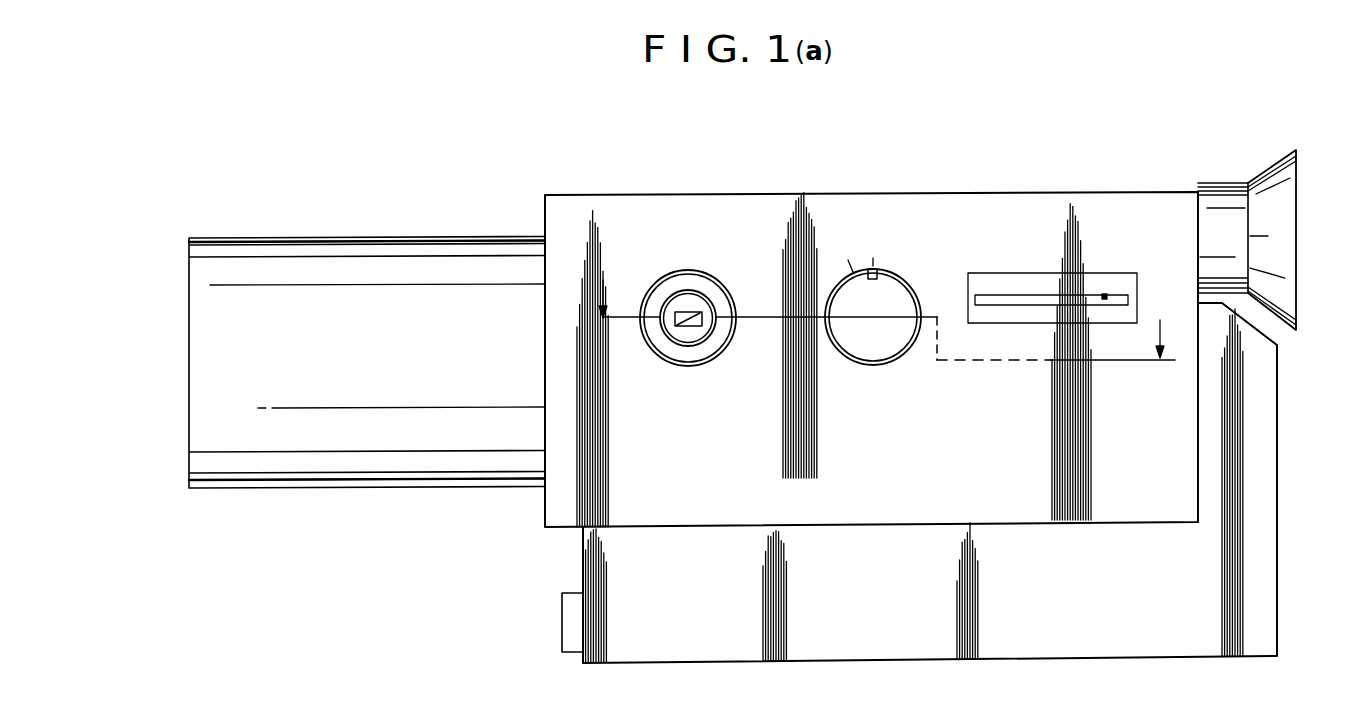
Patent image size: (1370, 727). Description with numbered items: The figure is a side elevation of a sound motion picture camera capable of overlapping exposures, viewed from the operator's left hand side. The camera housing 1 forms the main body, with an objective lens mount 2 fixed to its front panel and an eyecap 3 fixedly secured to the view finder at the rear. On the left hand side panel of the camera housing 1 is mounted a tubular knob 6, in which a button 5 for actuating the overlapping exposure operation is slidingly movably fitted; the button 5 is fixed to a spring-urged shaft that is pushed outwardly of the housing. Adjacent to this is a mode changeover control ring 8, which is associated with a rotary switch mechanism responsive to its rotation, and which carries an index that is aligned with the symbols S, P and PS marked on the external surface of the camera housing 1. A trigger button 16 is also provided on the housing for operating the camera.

The camera housing 1 is at (978, 215).
The objective lens mount 2 is at (385, 374).
The eyecap 3 is at (1282, 237).
The button 5 is at (692, 305).
The tubular knob 6 is at (664, 357).
The mode changeover control ring 8 is at (895, 302).
The trigger button 16 is at (569, 630).